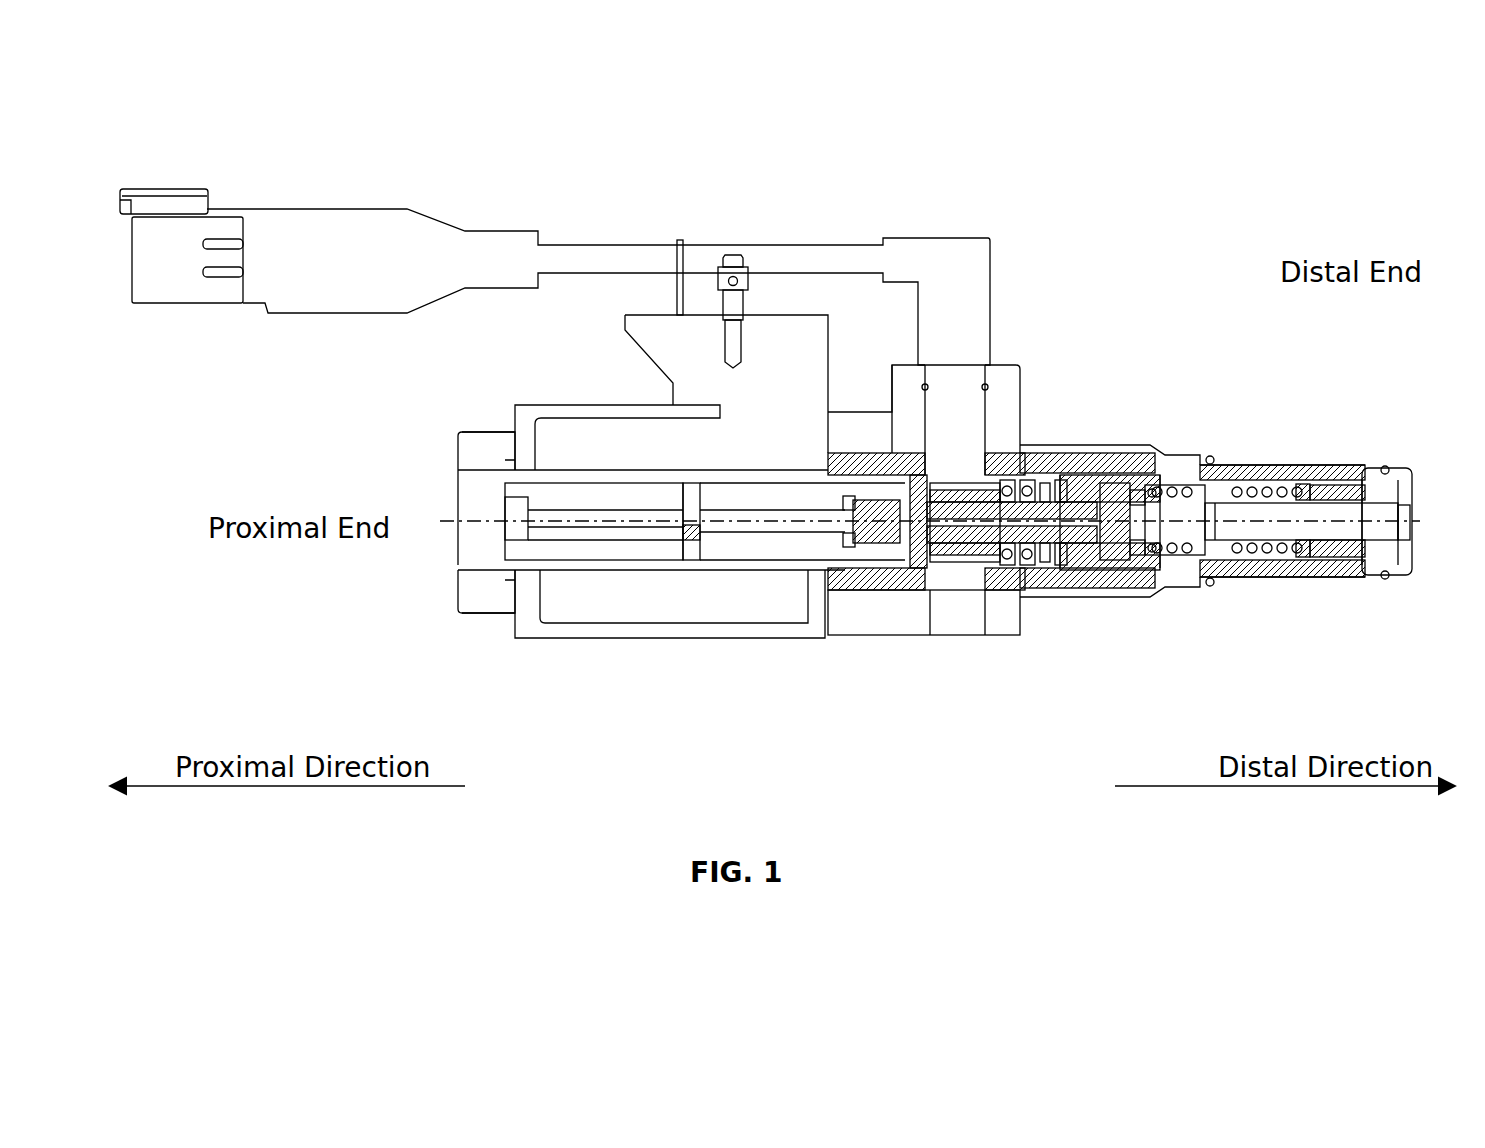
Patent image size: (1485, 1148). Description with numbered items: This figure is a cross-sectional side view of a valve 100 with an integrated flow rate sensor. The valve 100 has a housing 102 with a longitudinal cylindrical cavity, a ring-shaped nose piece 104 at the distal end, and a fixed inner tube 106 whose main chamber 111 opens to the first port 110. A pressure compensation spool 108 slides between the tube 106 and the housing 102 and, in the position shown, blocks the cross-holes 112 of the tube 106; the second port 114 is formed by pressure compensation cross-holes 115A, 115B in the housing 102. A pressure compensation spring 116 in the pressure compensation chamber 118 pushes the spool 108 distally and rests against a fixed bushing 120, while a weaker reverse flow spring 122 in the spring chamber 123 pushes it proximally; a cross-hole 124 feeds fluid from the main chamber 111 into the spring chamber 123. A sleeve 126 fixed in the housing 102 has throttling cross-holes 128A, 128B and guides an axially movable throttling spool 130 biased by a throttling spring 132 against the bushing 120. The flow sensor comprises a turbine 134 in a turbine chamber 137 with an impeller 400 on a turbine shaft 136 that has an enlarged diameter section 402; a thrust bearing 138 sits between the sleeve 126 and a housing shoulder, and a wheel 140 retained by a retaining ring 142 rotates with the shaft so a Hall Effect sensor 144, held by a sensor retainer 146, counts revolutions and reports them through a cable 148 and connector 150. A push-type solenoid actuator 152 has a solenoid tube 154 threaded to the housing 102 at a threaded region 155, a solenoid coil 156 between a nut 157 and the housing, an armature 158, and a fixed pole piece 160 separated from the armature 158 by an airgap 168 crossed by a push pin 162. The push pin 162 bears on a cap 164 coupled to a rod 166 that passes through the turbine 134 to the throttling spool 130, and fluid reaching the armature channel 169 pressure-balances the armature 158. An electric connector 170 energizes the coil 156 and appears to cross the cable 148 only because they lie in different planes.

The valve 100 is at (1197, 283).
The housing 102 is at (1188, 450).
The nose piece 104 is at (1405, 475).
The tube 106 is at (1270, 590).
The pressure compensation spool 108 is at (1350, 455).
The first port 110 is at (1410, 540).
The main chamber 111 is at (1372, 590).
The cross-holes 112 is at (1342, 570).
The second port 114 is at (1323, 450).
The pressure compensation cross-hole 115A is at (1300, 465).
The pressure compensation cross-hole 115B is at (1300, 578).
The pressure compensation spring 116 is at (1212, 590).
The pressure compensation chamber 118 is at (1230, 460).
The bushing 120 is at (1195, 580).
The reverse flow spring 122 is at (1375, 455).
The spring chamber 123 is at (1388, 572).
The cross-hole 124 is at (1395, 470).
The sleeve 126 is at (1120, 455).
The throttling cross-hole 128A is at (1068, 478).
The throttling cross-hole 128B is at (1070, 568).
The throttling spool 130 is at (1140, 565).
The throttling spring 132 is at (1170, 450).
The turbine 134 is at (1105, 480).
The turbine shaft 136 is at (1030, 570).
The turbine chamber 137 is at (1075, 548).
The thrust bearing 138 is at (1010, 565).
The wheel 140 is at (950, 600).
The retaining ring 142 is at (918, 595).
The Hall Effect sensor 144 is at (1002, 385).
The sensor retainer 146 is at (850, 392).
The cable 148 is at (803, 245).
The connector 150 is at (190, 188).
The solenoid actuator 152 is at (541, 386).
The solenoid tube 154 is at (765, 565).
The threaded region 155 is at (850, 572).
The solenoid coil 156 is at (580, 605).
The nut 157 is at (485, 605).
The armature 158 is at (557, 500).
The pole piece 160 is at (800, 540).
The push pin 162 is at (720, 528).
The cap 164 is at (880, 548).
The rod 166 is at (963, 385).
The airgap 168 is at (688, 560).
The armature channel 169 is at (638, 545).
The electric connector 170 is at (724, 262).
The impeller 400 is at (1100, 565).
The enlarged diameter section 402 is at (1040, 475).